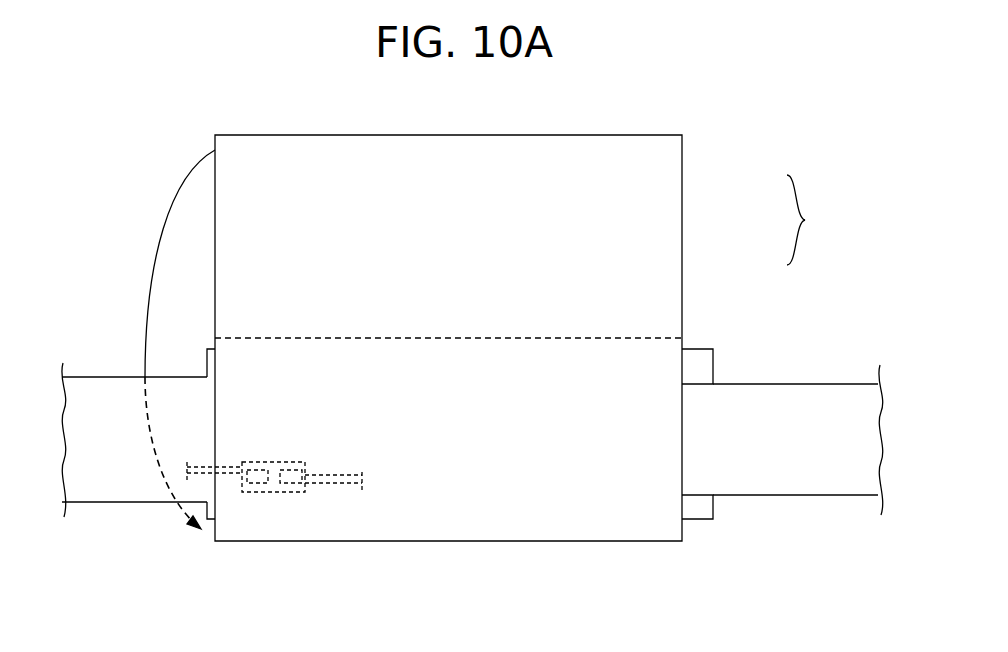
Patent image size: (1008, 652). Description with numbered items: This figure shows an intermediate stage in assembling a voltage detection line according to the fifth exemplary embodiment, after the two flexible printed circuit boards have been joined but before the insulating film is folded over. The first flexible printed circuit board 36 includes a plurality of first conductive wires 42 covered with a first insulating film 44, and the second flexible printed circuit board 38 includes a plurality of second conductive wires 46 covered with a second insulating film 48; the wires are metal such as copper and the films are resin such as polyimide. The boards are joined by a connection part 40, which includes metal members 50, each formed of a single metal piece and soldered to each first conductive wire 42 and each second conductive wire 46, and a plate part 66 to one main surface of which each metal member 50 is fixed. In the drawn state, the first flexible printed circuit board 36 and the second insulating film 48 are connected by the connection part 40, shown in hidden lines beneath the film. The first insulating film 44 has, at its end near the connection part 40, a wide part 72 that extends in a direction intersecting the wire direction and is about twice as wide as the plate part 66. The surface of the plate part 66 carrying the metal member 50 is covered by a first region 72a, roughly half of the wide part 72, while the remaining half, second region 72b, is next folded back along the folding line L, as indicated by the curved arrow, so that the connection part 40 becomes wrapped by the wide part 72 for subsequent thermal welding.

The first flexible printed circuit board 36 is at (87, 505).
The second flexible printed circuit board 38 is at (828, 497).
The connection part 40 is at (713, 520).
The first conductive wire 42 is at (228, 475).
The first insulating film 44 is at (115, 390).
The second conductive wire 46 is at (327, 483).
The second insulating film 48 is at (829, 402).
The metal member 50 is at (270, 492).
The plate part 66 is at (697, 368).
The wide part 72 is at (815, 220).
The first region 72a is at (642, 360).
The second region 72b is at (630, 233).
The folding line L is at (268, 337).